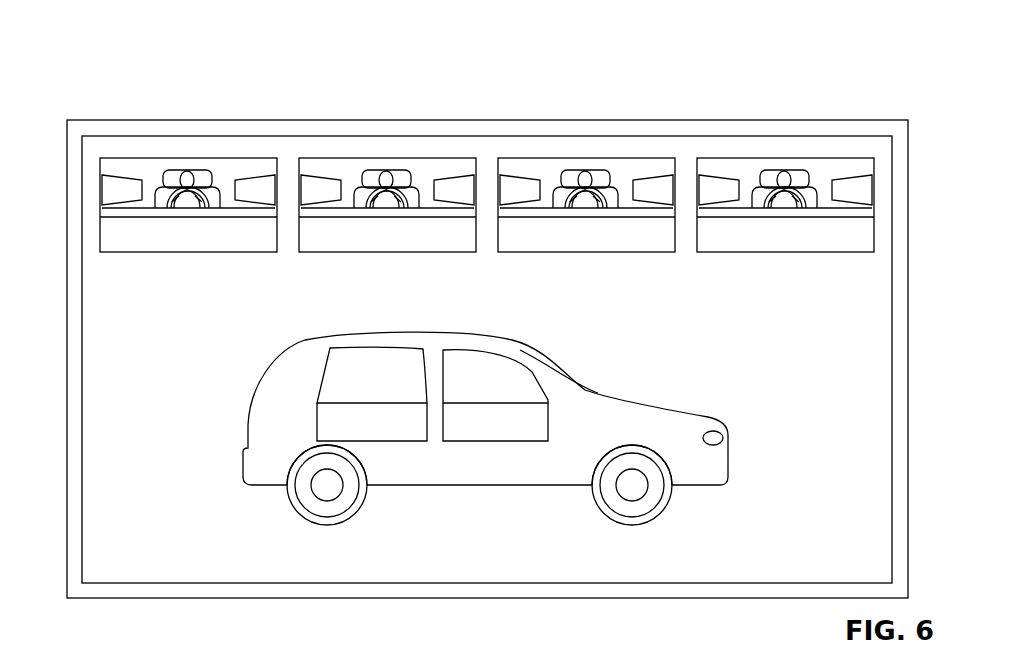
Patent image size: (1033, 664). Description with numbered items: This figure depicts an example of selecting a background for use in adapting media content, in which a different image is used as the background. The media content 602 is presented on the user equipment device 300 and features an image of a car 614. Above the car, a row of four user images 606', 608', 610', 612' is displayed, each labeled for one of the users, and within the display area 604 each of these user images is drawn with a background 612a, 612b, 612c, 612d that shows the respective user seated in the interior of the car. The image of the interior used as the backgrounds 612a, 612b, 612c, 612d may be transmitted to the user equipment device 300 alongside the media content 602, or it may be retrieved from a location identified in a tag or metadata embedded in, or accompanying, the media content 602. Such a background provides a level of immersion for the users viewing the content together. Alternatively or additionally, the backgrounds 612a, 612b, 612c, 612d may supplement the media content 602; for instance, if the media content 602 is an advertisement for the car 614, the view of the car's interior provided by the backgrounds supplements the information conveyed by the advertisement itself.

The user equipment device 300 is at (122, 33).
The media content 602 is at (848, 332).
The display area 604 is at (98, 185).
The user image 606' is at (185, 151).
The user image 608' is at (384, 152).
The user image 610' is at (583, 152).
The user image 612' is at (782, 152).
The background 612a is at (188, 129).
The background 612b is at (387, 130).
The background 612c is at (586, 132).
The background 612d is at (785, 130).
The car 614 is at (742, 458).